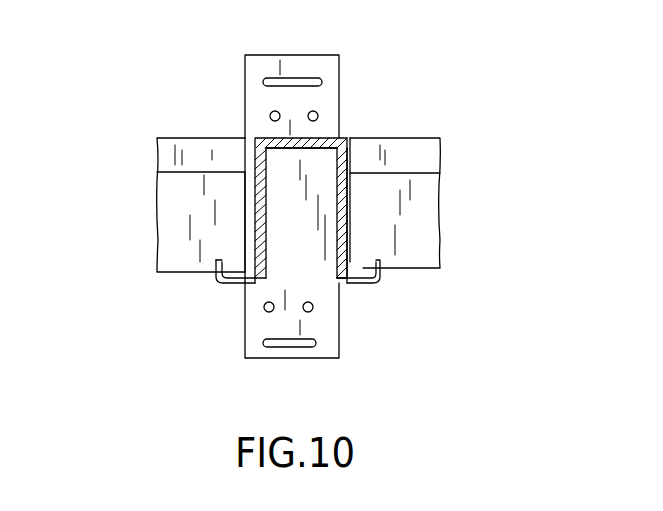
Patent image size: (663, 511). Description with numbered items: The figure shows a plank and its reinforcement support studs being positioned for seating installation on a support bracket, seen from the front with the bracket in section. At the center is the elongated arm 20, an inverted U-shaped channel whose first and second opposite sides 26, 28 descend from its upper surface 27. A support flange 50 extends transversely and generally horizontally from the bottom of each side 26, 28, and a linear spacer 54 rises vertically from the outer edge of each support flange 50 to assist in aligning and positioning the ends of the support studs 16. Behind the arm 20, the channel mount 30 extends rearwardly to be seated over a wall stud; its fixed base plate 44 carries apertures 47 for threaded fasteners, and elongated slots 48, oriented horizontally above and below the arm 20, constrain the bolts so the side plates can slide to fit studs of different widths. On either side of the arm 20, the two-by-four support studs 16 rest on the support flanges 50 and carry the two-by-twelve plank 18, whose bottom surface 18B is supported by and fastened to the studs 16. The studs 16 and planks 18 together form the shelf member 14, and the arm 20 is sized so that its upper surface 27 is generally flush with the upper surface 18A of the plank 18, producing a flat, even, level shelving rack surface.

The shelf member 14 is at (78, 243).
The support stud 16 is at (151, 271).
The plank 18 is at (157, 170).
The upper surface of plank 18A is at (166, 137).
The bottom surface of plank 18B is at (182, 183).
The elongated arm 20 is at (318, 130).
The first side of elongated arm 26 is at (352, 213).
The upper surface of elongated arm 27 is at (333, 139).
The second side of elongated arm 28 is at (247, 213).
The channel mount 30 is at (346, 63).
The base plate 44 is at (255, 331).
The aperture 47 is at (269, 116).
The elongated slot 48 is at (263, 82).
The support flange 50 is at (230, 284).
The spacer 54 is at (215, 276).